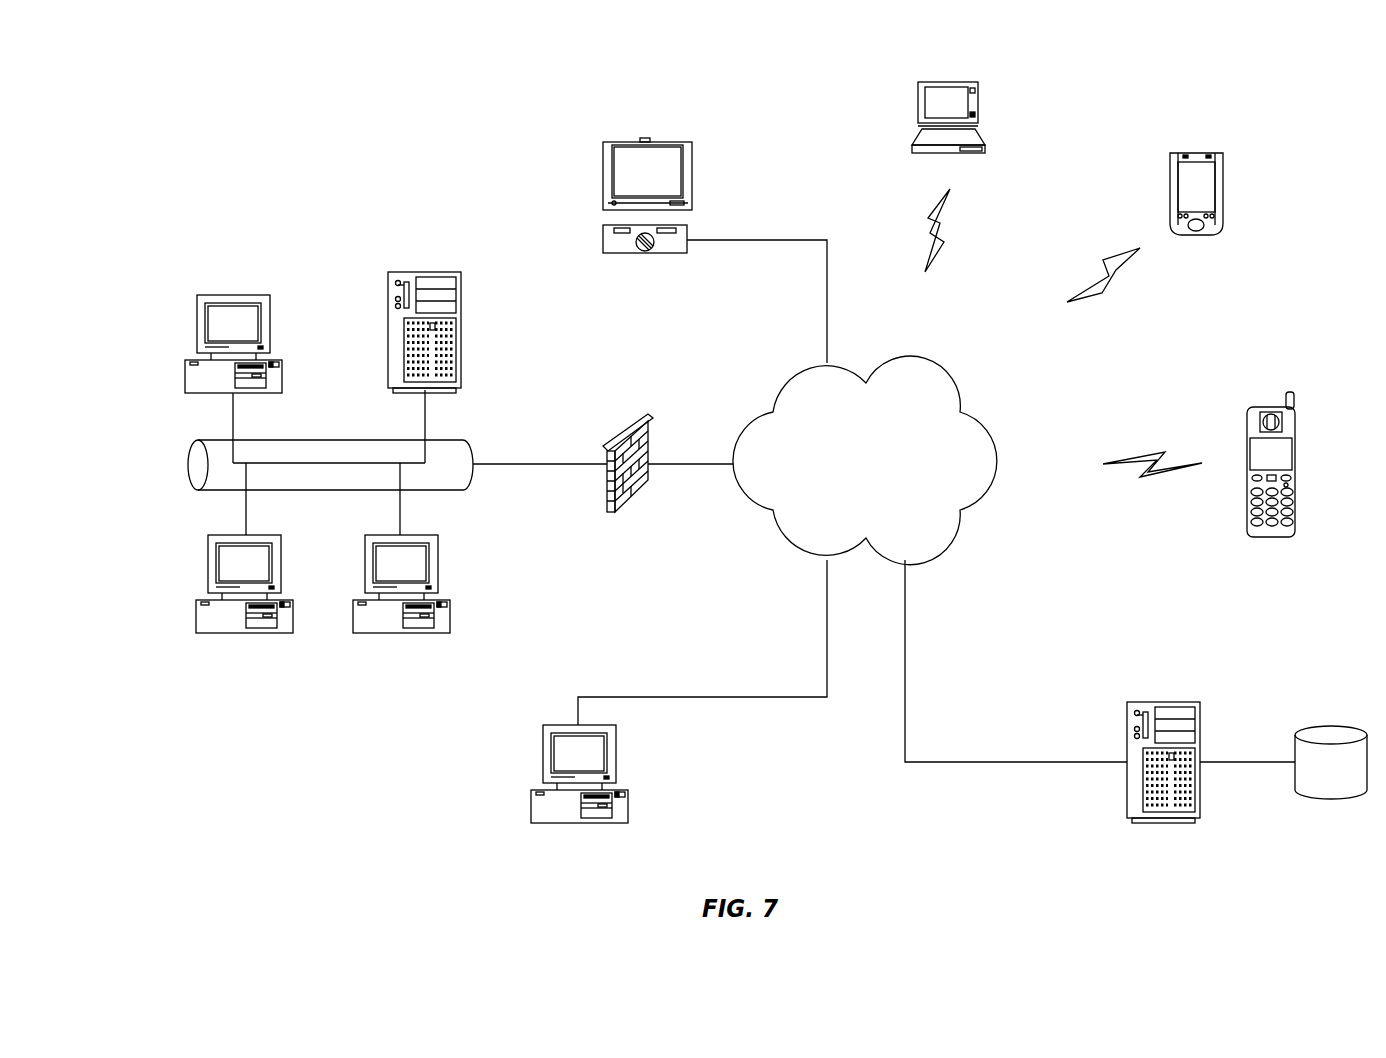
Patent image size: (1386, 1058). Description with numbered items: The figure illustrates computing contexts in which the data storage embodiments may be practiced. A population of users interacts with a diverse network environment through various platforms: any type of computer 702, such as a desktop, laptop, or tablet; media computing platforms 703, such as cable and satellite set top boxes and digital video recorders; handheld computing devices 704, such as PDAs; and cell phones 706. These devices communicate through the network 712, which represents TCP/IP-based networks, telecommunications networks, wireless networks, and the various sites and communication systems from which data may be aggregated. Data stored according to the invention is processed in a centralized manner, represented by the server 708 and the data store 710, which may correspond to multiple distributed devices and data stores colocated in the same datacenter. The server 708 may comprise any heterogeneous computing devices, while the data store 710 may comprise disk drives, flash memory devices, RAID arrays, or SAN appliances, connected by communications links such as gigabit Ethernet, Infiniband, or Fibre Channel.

The computer 702 is at (541, 428).
The media computing platform 703 is at (596, 195).
The handheld computing device 704 is at (1149, 170).
The cell phone 706 is at (1223, 453).
The server 708 is at (1119, 739).
The data store 710 is at (1297, 740).
The network 712 is at (843, 450).